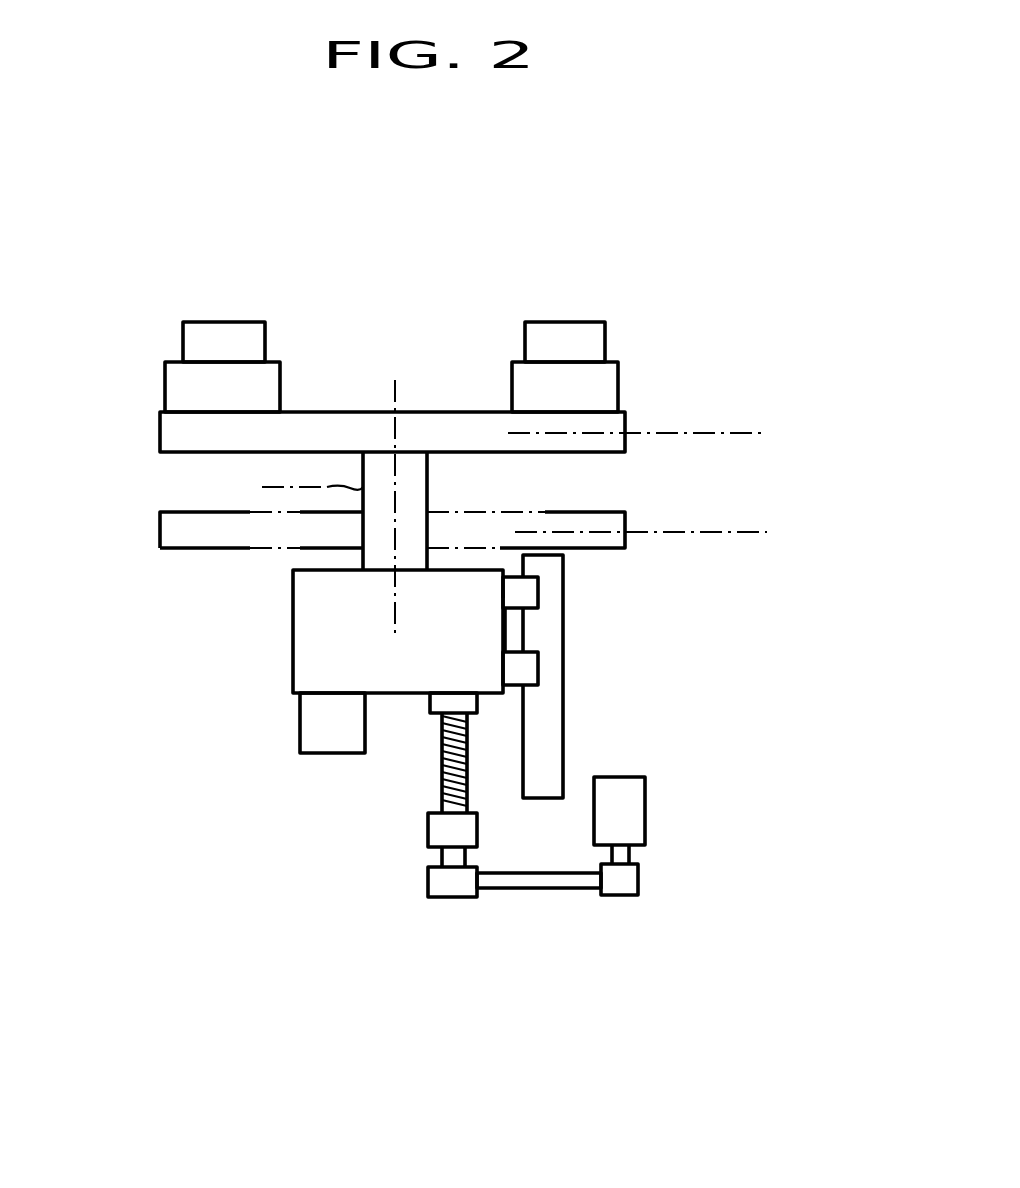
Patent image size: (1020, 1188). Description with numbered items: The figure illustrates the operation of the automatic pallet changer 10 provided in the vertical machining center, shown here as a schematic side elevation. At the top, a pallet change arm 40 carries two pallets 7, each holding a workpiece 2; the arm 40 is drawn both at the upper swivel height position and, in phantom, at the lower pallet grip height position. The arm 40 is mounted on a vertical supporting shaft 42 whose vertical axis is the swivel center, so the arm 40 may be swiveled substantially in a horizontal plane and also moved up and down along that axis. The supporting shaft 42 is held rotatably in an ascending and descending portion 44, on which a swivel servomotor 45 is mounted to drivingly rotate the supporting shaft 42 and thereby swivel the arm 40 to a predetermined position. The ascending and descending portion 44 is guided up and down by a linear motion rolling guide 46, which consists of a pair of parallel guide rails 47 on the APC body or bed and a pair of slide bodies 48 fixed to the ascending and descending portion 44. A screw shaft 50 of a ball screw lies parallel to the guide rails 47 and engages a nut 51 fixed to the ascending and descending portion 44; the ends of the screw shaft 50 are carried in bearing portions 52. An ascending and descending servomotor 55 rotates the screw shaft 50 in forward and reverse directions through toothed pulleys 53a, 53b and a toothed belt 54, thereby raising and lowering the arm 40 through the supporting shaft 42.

The automatic pallet changer 10 is at (735, 240).
The workpiece 2 is at (267, 332).
The pallet 7 is at (165, 388).
The pallet change arm 40 is at (337, 412).
The supporting shaft 42 is at (427, 487).
The ascending and descending portion 44 is at (293, 637).
The swivel servomotor 45 is at (300, 727).
The linear motion rolling guide 46 is at (537, 622).
The guide rail 47 is at (563, 627).
The slide body 48 is at (503, 593).
The screw shaft 50 is at (442, 787).
The nut 51 is at (430, 700).
The bearing portion 52 is at (428, 830).
The toothed pulley 53a is at (455, 897).
The toothed pulley 53b is at (624, 897).
The toothed belt 54 is at (555, 888).
The ascending and descending servomotor 55 is at (645, 790).